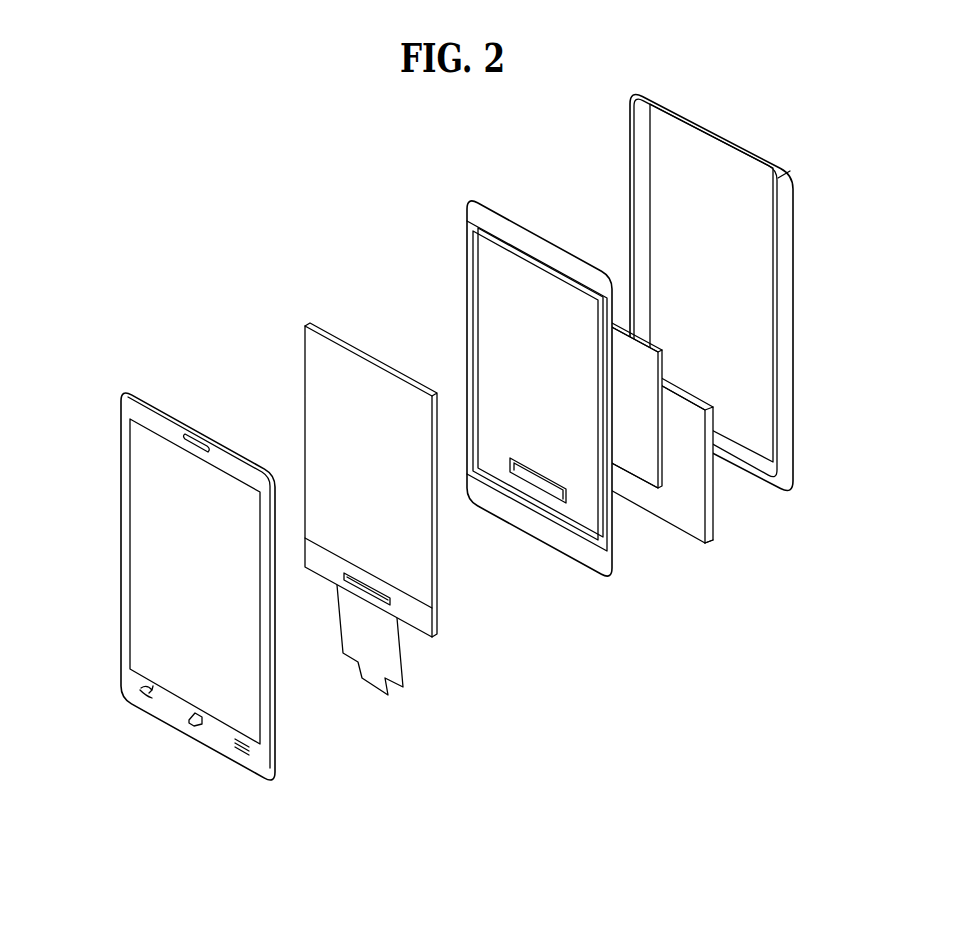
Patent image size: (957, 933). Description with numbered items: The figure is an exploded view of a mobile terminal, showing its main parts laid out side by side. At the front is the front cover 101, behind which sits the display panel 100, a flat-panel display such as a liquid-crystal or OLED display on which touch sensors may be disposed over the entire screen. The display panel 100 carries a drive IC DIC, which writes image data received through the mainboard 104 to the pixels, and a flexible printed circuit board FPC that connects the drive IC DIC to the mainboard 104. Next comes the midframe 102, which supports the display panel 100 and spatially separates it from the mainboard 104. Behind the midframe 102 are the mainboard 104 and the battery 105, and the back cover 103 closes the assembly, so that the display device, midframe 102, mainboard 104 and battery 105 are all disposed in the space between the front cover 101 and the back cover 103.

The display panel 100 is at (423, 622).
The front cover 101 is at (128, 679).
The midframe 102 is at (585, 555).
The back cover 103 is at (787, 387).
The mainboard 104 is at (643, 465).
The battery 105 is at (708, 520).
The drive IC DIC is at (340, 578).
The flexible printed circuit board FPC is at (392, 660).